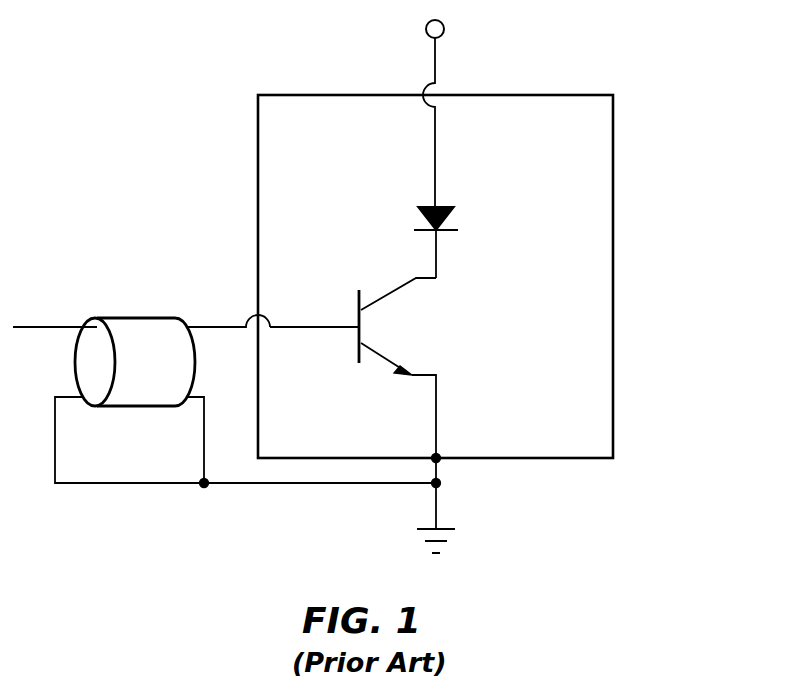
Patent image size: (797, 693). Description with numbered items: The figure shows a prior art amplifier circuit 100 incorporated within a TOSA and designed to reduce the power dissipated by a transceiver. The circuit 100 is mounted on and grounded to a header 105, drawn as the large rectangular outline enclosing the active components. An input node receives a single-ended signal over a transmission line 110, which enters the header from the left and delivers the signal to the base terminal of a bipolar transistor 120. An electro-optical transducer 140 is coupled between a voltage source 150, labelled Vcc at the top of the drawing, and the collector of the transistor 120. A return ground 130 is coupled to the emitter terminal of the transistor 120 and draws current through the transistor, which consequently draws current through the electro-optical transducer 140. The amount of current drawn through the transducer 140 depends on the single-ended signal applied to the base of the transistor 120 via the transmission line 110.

The amplifier circuit 100 is at (685, 143).
The header 105 is at (615, 272).
The transmission line 110 is at (215, 325).
The bipolar transistor 120 is at (362, 318).
The return ground 130 is at (437, 548).
The electro-optical transducer 140 is at (444, 206).
The voltage source 150 is at (427, 26).